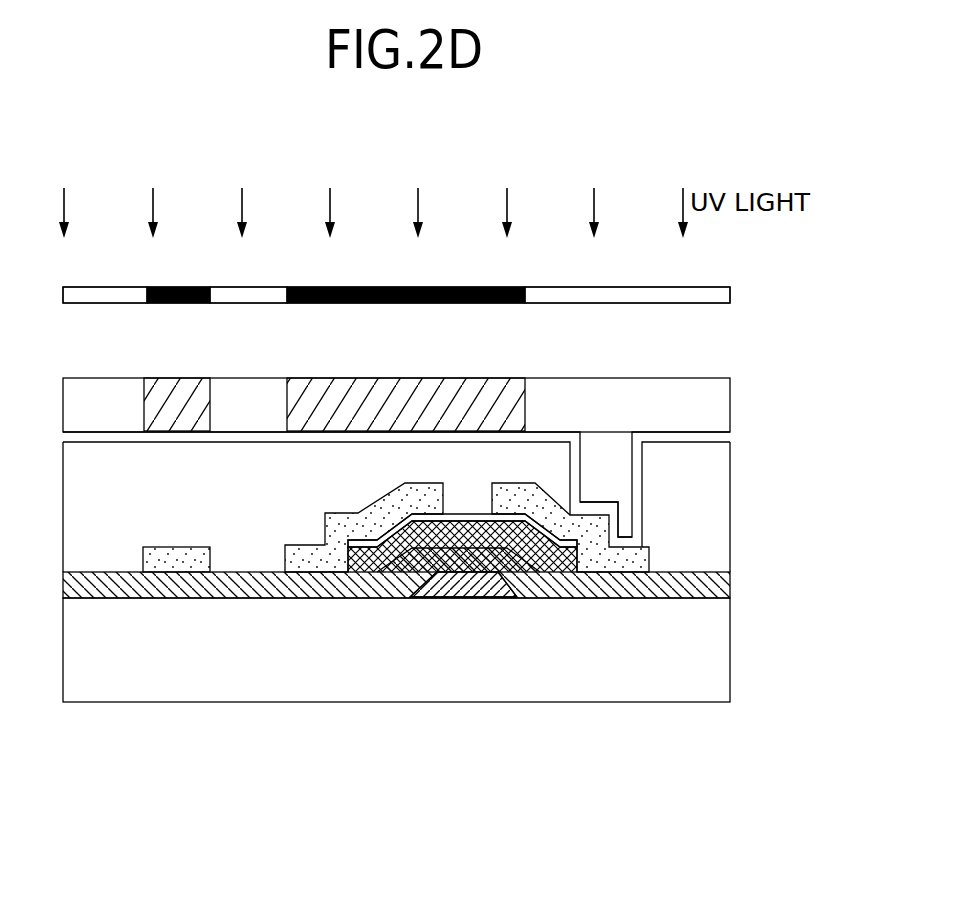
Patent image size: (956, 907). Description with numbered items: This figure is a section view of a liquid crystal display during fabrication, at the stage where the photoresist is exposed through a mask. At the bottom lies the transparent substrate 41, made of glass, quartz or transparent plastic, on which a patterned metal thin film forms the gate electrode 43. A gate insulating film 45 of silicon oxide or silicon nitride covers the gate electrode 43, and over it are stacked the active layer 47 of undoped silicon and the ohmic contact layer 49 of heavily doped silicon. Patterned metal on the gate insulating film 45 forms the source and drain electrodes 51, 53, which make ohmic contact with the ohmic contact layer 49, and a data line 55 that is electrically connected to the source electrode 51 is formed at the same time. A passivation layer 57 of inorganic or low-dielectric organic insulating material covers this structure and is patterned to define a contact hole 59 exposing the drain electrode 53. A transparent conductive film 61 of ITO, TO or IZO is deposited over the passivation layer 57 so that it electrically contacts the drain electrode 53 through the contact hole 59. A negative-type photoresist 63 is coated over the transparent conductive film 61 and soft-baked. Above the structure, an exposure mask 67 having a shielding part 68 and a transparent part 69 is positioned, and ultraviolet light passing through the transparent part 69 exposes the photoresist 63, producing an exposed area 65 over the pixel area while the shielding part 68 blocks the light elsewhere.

The transparent substrate 41 is at (724, 660).
The gate electrode 43 is at (467, 590).
The gate insulating film 45 is at (724, 587).
The active layer 47 is at (366, 560).
The ohmic contact layer 49 is at (577, 548).
The source electrode 51 is at (316, 556).
The drain electrode 53 is at (621, 560).
The data line 55 is at (176, 560).
The passivation layer 57 is at (724, 512).
The contact hole 59 is at (610, 463).
The transparent conductive film 61 is at (724, 437).
The negative-type photoresist 63 is at (482, 390).
The exposed area 65 is at (724, 402).
The exposure mask 67 is at (750, 295).
The shielding part 68 is at (189, 290).
The transparent part 69 is at (100, 294).